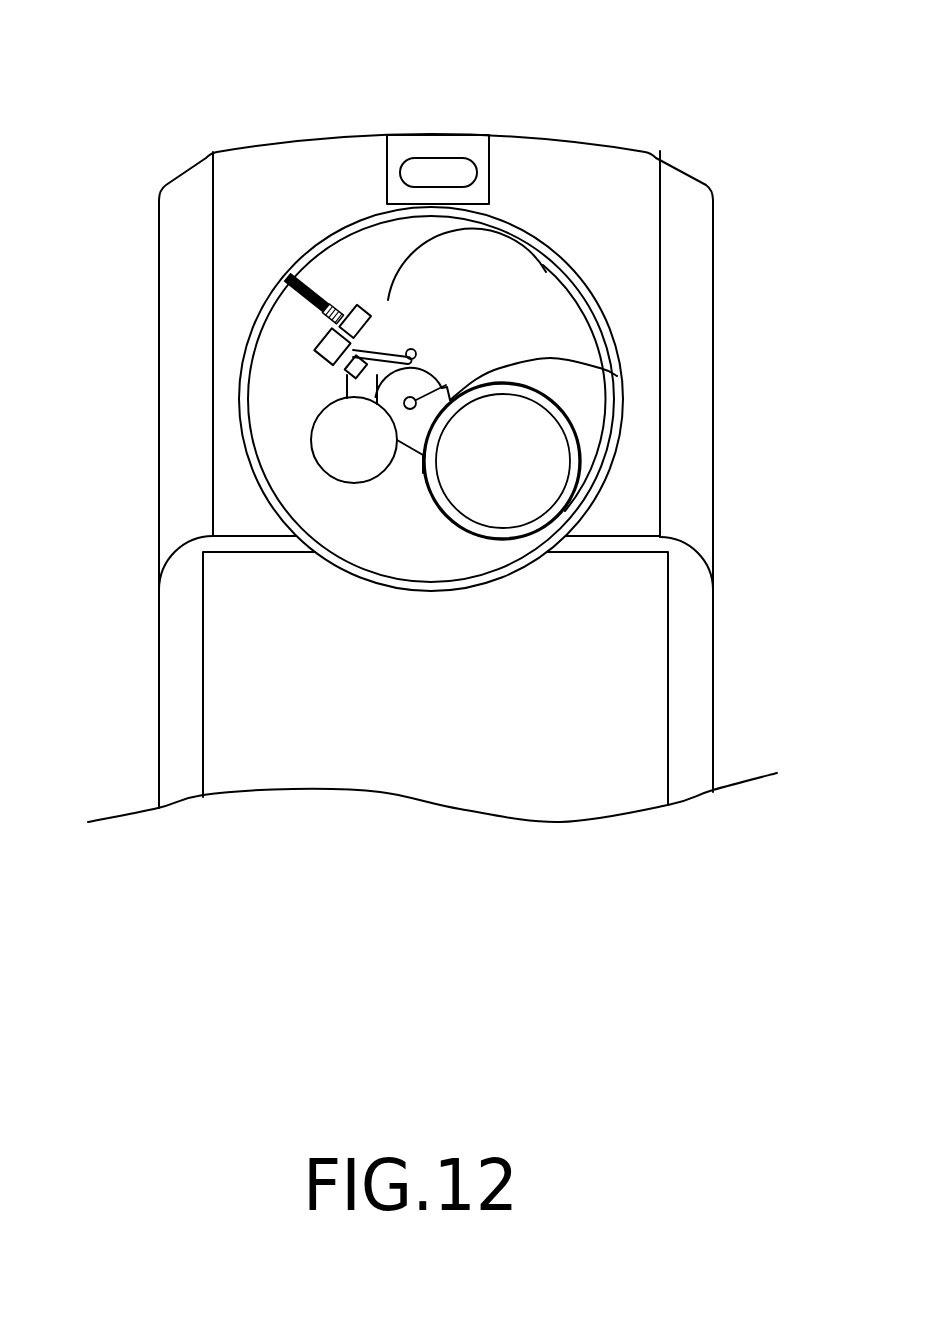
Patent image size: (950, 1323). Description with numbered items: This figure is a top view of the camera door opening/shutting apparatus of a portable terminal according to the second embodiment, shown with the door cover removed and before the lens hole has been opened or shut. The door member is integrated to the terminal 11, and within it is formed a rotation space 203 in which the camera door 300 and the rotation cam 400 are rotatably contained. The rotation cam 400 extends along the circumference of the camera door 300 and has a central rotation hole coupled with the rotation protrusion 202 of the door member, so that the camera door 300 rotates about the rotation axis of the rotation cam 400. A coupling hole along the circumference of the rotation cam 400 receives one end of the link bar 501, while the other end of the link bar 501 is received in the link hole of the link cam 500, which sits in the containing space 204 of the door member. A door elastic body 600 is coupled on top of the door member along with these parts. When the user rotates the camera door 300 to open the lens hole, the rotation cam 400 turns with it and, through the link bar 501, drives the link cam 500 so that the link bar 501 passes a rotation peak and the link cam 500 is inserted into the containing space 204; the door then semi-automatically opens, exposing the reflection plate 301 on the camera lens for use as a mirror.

The terminal 11 is at (150, 538).
The rotation protrusion 202 is at (600, 372).
The rotation space 203 is at (548, 300).
The containing space 204 is at (335, 350).
The camera door 300 is at (580, 437).
The reflection plate 301 is at (538, 478).
The rotation cam 400 is at (360, 397).
The link cam 500 is at (346, 308).
The link bar 501 is at (343, 375).
The door elastic body 600 is at (287, 279).